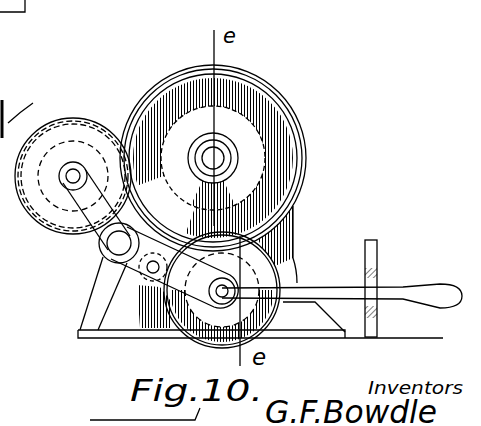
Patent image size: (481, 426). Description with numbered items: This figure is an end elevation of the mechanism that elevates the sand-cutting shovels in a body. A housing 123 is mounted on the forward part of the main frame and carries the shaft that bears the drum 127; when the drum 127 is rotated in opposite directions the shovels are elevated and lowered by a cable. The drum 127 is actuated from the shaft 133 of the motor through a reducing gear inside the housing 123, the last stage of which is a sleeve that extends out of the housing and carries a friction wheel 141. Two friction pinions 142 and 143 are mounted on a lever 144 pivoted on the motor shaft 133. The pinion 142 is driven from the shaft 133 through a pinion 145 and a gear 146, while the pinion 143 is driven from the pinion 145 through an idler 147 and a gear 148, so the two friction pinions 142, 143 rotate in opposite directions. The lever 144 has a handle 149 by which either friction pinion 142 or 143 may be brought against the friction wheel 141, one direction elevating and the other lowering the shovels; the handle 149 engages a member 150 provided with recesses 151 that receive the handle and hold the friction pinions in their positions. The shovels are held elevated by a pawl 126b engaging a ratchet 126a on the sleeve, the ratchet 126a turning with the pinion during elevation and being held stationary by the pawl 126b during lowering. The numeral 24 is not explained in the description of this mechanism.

The adjacent figure part 24 is at (8, 65).
The housing 123 is at (305, 230).
The ratchet 126a is at (355, 111).
The pawl 126b is at (156, 84).
The drum 127 is at (38, 97).
The motor shaft 133 is at (107, 260).
The friction wheel 141 is at (270, 90).
The friction pinion 142 is at (57, 207).
The friction pinion 143 is at (245, 258).
The lever 144 is at (82, 257).
The pinion 145 is at (80, 300).
The gear 146 is at (88, 123).
The idler 147 is at (112, 333).
The gear 148 is at (228, 234).
The handle 149 is at (322, 289).
The member 150 is at (378, 248).
The recesses 151 is at (377, 272).